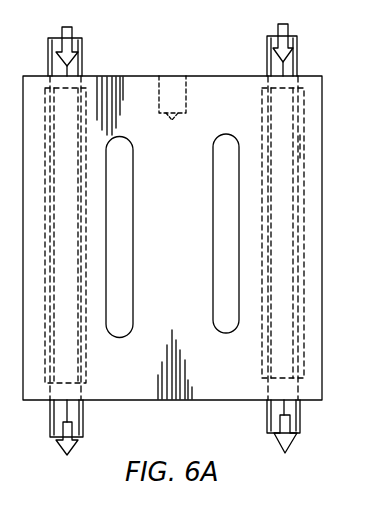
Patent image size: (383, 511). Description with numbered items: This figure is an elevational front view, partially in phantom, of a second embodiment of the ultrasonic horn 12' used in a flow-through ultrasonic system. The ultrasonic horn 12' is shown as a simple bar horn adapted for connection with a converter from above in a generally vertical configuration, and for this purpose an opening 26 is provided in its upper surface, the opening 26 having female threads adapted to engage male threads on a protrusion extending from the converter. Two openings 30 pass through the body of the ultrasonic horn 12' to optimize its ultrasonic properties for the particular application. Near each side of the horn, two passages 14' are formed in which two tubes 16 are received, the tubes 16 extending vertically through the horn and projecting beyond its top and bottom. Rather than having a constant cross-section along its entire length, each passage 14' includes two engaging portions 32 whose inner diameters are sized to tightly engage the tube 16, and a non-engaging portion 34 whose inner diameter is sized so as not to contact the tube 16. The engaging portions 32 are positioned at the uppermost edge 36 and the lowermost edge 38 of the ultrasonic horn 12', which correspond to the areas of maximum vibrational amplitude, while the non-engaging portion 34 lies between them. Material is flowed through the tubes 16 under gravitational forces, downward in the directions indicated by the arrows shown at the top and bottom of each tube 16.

The ultrasonic horn 12' is at (194, 238).
The passage 14' is at (333, 131).
The tube 16 is at (296, 44).
The opening 26 is at (180, 72).
The opening 30 is at (126, 318).
The engaging portion 32 is at (300, 64).
The non-engaging portion 34 is at (303, 176).
The uppermost edge 36 is at (120, 75).
The lowermost edge 38 is at (232, 400).